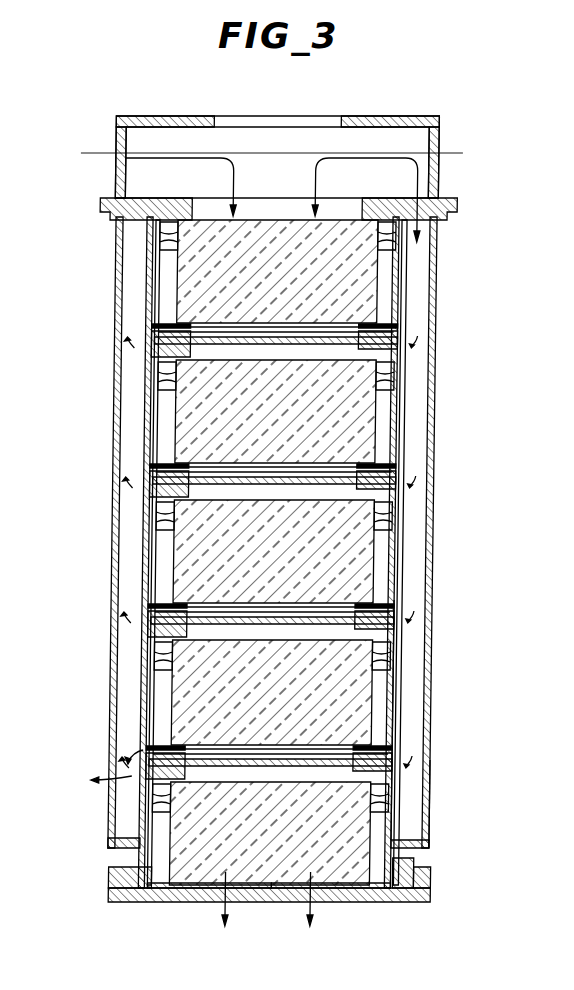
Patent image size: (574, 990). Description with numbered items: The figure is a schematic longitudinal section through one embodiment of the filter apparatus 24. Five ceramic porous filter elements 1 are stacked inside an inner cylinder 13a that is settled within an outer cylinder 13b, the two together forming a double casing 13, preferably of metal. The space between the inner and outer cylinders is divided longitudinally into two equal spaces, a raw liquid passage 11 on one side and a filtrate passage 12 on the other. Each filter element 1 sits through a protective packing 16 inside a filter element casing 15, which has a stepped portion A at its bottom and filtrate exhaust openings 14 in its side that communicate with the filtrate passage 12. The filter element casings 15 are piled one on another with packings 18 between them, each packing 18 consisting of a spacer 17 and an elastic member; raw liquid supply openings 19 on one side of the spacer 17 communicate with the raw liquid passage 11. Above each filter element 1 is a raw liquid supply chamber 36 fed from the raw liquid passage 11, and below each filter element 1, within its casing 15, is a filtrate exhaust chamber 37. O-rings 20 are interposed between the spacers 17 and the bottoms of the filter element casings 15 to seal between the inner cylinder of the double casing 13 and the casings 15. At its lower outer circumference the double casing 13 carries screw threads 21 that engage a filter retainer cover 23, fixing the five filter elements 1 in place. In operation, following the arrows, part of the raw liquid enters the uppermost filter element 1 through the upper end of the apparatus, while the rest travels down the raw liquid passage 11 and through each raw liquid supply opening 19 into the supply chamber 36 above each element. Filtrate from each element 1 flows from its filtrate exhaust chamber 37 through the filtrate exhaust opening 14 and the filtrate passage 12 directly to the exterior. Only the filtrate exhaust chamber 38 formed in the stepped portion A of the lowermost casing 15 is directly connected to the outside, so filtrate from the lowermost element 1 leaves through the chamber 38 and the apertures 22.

The ceramic porous filter element 1 is at (357, 278).
The raw liquid passage 11 is at (413, 542).
The filtrate passage 12 is at (135, 585).
The double casing 13 is at (433, 720).
The inner cylinder 13a is at (400, 740).
The outer cylinder 13b is at (432, 788).
The filtrate exhaust opening 14 is at (167, 320).
The filter element casing 15 is at (158, 300).
The protective packing 16 is at (378, 595).
The spacer 17 is at (398, 638).
The packing 18 is at (397, 373).
The raw liquid supply opening 19 is at (400, 500).
The O-ring 20 is at (397, 473).
The screw threads 21 is at (413, 863).
The aperture 22 is at (346, 895).
The filter retainer cover 23 is at (430, 883).
The filter apparatus 24 is at (398, 113).
The raw liquid supply chamber 36 is at (157, 540).
The filtrate exhaust chamber 37 is at (250, 325).
The filtrate exhaust chamber 38 is at (208, 890).
The stepped portion A is at (158, 635).